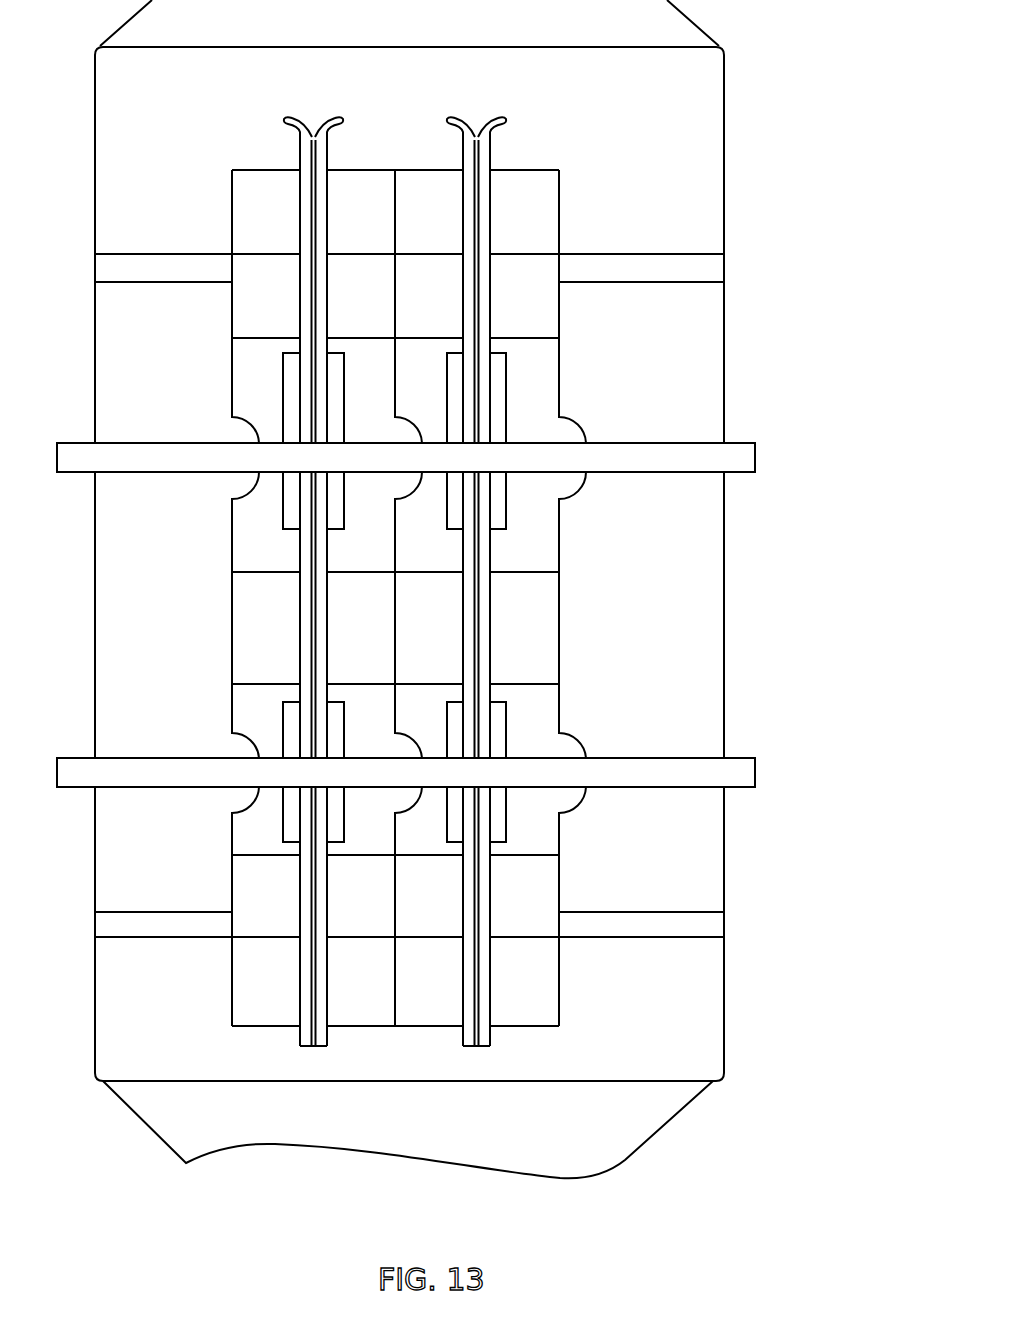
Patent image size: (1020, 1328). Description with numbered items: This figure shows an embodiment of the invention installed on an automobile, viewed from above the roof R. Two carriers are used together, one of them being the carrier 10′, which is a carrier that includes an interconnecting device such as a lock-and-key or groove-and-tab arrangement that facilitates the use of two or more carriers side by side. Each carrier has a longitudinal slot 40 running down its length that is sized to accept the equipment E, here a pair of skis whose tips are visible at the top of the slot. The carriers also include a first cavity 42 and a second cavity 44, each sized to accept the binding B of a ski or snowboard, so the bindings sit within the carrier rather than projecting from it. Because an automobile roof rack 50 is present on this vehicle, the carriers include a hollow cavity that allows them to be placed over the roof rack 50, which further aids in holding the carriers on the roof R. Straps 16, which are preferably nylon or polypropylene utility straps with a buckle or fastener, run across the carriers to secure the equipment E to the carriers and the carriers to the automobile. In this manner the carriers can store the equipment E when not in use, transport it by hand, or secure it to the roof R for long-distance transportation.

The roof R is at (696, 120).
The equipment E is at (291, 117).
The longitudinal slot 40 is at (505, 213).
The carrier 10′ is at (570, 232).
The automobile roof rack 50 is at (700, 254).
The binding B is at (507, 400).
The straps 16 is at (700, 443).
The second cavity 44 is at (546, 519).
The first cavity 42 is at (547, 829).